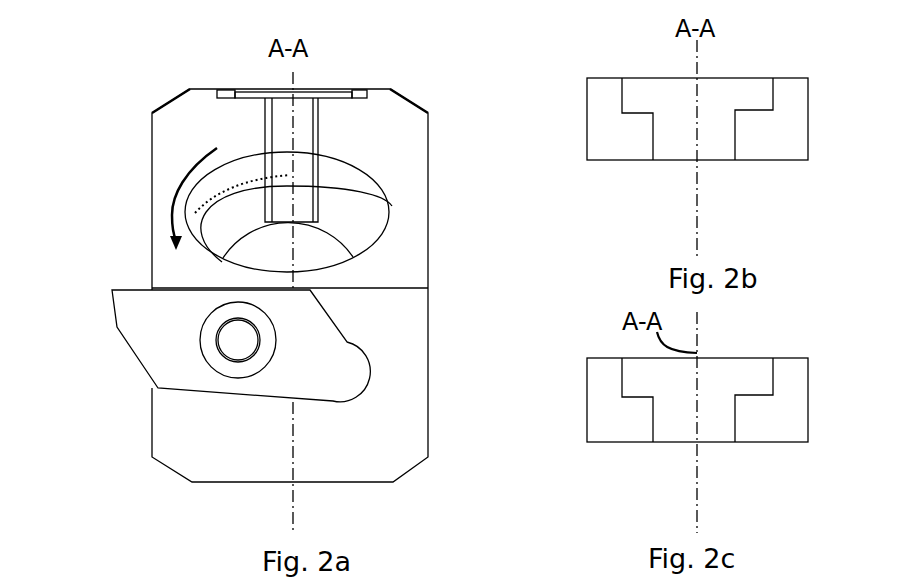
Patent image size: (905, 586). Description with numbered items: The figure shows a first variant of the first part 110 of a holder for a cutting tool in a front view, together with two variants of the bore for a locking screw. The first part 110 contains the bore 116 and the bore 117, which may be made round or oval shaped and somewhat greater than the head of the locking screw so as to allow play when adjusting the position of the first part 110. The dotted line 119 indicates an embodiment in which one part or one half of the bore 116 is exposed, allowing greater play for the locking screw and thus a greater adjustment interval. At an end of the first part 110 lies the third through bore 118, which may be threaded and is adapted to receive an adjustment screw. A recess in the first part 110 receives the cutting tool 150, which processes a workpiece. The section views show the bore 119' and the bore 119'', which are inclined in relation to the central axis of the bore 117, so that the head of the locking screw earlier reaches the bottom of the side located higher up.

In FIG. 2A, the first part 110 is at (144, 79).
In FIG. 2A, the bore 116 is at (213, 185).
In FIG. 2A, the bore 117 is at (327, 248).
In FIG. 2A, the third through bore 118 is at (307, 138).
In FIG. 2A, the dotted line 119 is at (191, 199).
In FIG. 2A, the cutting tool 150 is at (146, 332).
In FIG. 2B, the bore 119' is at (664, 115).
In FIG. 2C, the bore 119'' is at (654, 399).